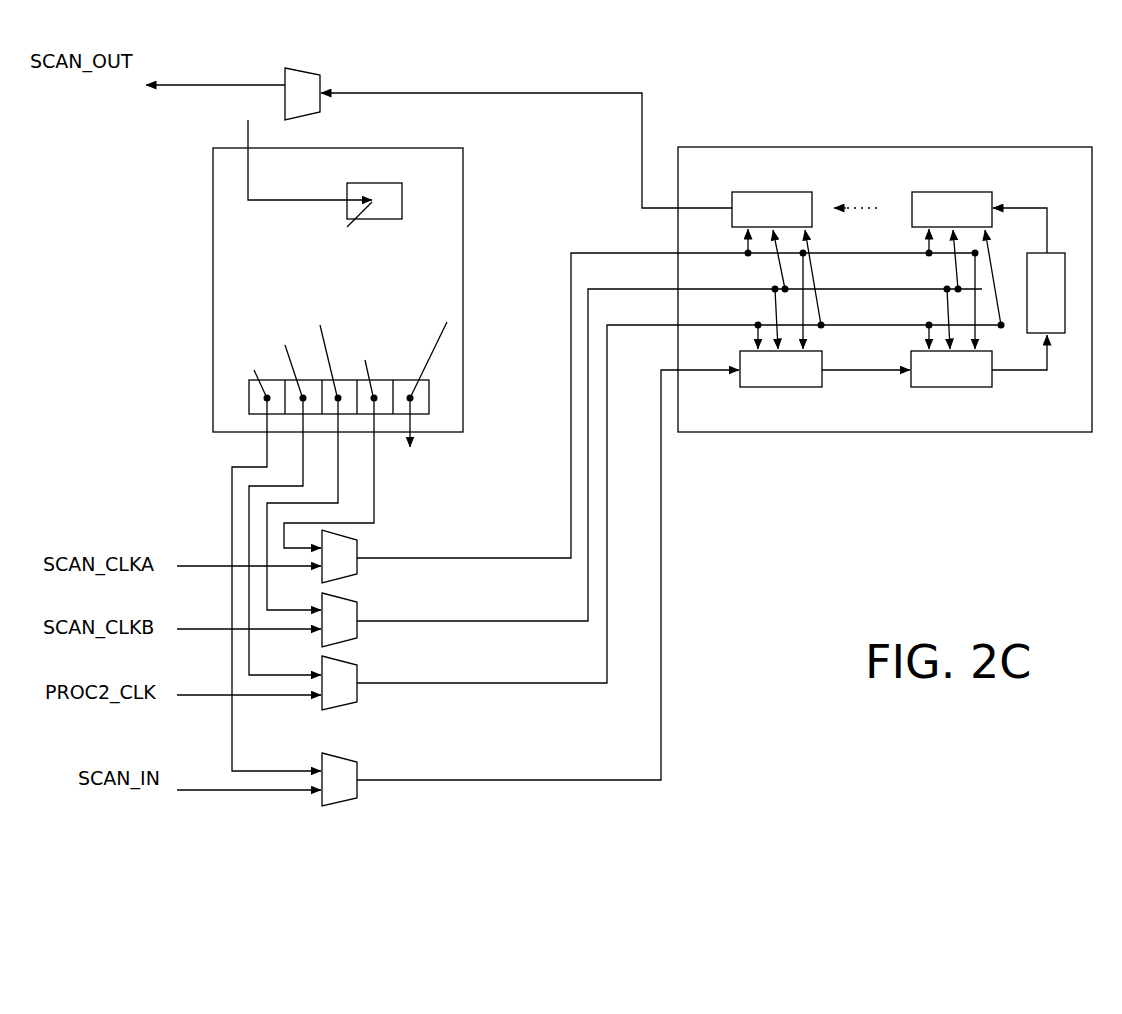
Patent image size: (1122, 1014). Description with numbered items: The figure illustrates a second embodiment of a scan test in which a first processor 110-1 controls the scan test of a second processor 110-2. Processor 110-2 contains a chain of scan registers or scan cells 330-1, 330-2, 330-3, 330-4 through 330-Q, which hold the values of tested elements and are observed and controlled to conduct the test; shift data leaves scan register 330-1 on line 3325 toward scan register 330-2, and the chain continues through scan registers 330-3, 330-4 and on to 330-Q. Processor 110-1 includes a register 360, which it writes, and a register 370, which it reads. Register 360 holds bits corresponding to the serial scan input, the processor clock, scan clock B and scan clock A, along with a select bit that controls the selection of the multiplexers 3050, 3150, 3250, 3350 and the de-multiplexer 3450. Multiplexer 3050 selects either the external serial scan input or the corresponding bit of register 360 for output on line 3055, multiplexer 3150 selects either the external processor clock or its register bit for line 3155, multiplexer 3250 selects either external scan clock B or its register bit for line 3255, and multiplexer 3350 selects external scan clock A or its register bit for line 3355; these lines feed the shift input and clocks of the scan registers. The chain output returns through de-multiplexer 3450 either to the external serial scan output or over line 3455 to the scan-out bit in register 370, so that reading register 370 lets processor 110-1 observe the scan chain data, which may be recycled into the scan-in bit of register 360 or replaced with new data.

The first processor 110-1 is at (211, 252).
The second processor 110-2 is at (965, 146).
The de-multiplexer 3450 is at (294, 68).
The line 3455 is at (526, 135).
The register 370 is at (402, 200).
The register 360 is at (429, 396).
The multiplexer 3350 is at (357, 540).
The line 3355 is at (668, 405).
The multiplexer 3250 is at (318, 645).
The line 3255 is at (669, 454).
The multiplexer 3150 is at (345, 705).
The line 3155 is at (681, 504).
The multiplexer 3050 is at (343, 802).
The line 3055 is at (548, 576).
The line 3325 is at (866, 360).
The scan register 330-Q is at (804, 258).
The scan register 330-4 is at (979, 258).
The scan register 330-3 is at (1028, 311).
The scan register 330-2 is at (951, 320).
The scan register 330-1 is at (781, 320).